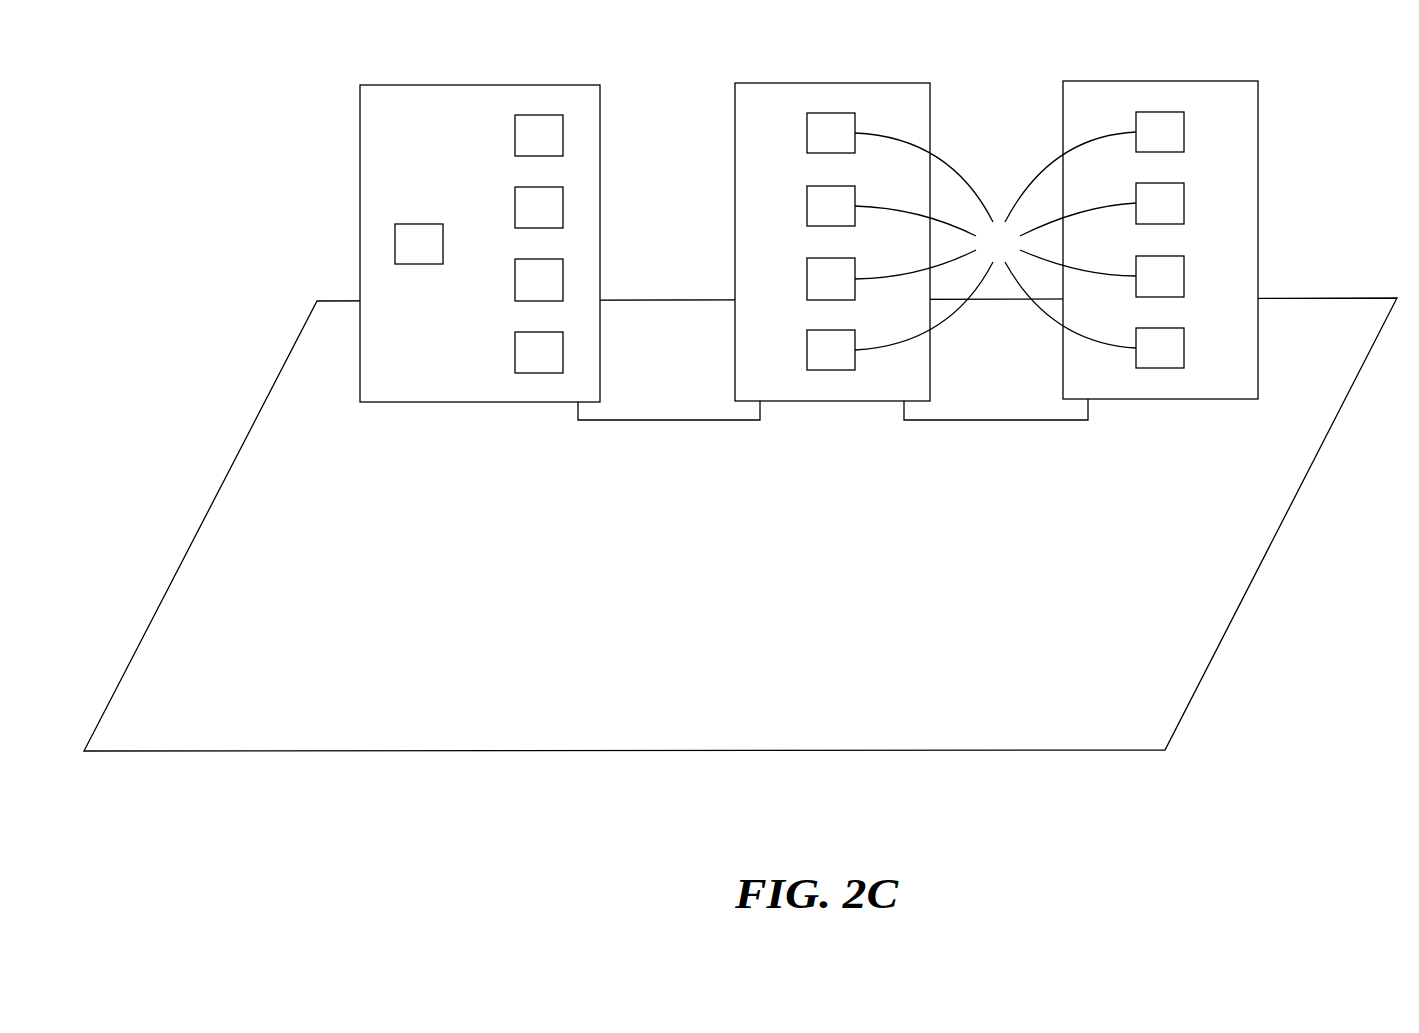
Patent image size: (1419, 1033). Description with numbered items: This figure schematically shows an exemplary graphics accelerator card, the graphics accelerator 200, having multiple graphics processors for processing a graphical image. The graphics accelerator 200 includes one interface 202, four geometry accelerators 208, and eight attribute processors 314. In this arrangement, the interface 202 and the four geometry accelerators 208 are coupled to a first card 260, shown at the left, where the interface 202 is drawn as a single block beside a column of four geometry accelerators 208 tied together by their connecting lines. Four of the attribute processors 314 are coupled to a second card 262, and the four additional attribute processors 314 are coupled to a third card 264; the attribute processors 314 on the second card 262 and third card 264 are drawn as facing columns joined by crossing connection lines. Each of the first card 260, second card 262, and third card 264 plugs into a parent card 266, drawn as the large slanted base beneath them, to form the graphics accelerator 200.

The graphics accelerator 200 is at (1337, 116).
The interface 202 is at (395, 243).
The geometry accelerators 208 is at (563, 134).
The first card 260 is at (416, 388).
The second card 262 is at (781, 386).
The third card 264 is at (1112, 385).
The parent card 266 is at (731, 656).
The attribute processors 314 is at (995, 241).